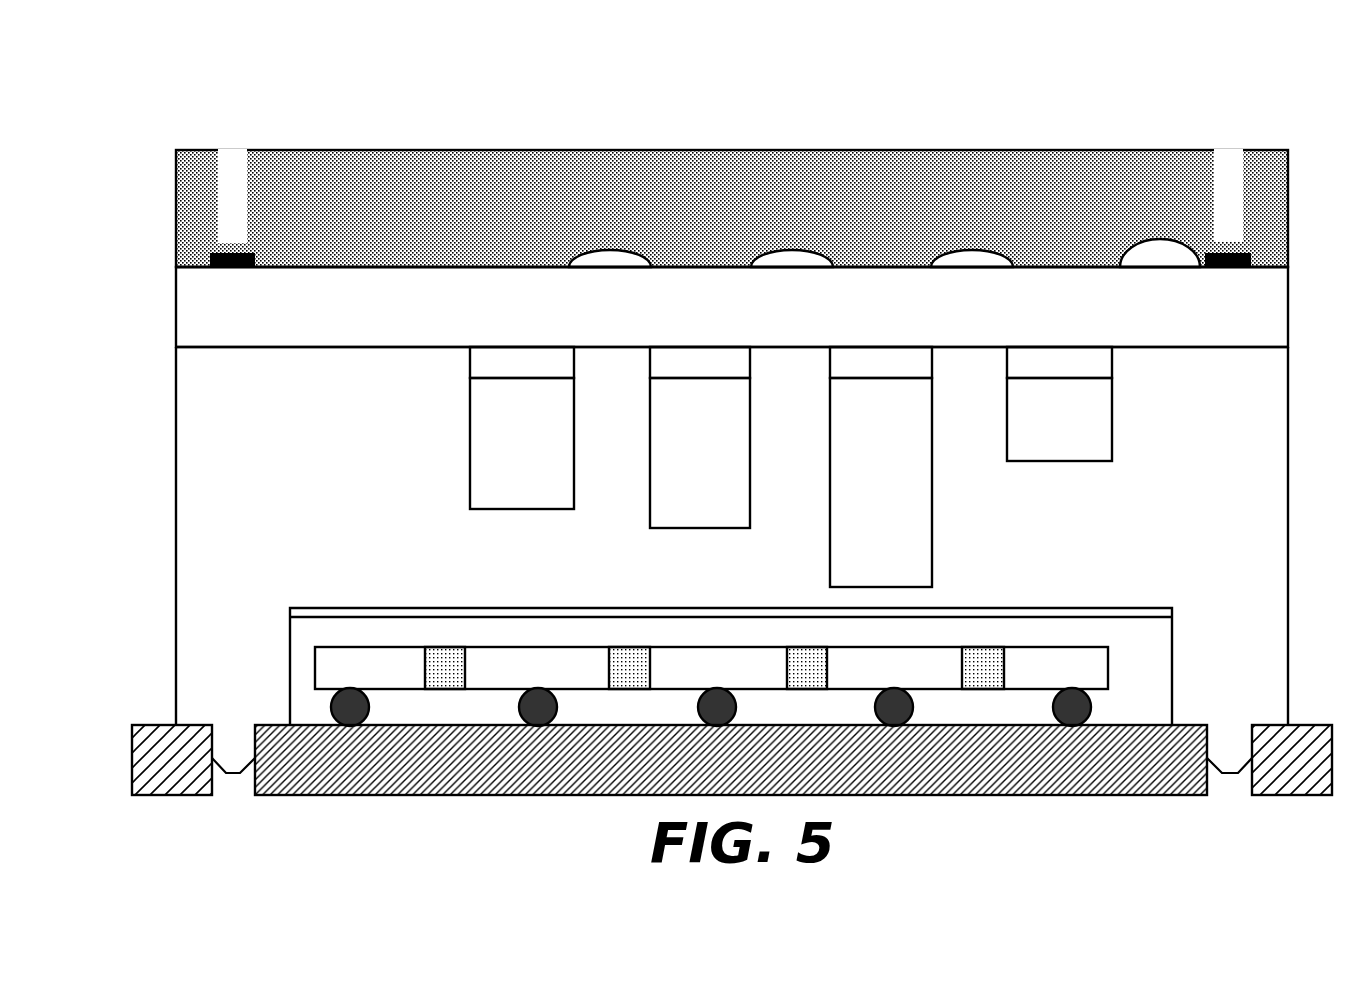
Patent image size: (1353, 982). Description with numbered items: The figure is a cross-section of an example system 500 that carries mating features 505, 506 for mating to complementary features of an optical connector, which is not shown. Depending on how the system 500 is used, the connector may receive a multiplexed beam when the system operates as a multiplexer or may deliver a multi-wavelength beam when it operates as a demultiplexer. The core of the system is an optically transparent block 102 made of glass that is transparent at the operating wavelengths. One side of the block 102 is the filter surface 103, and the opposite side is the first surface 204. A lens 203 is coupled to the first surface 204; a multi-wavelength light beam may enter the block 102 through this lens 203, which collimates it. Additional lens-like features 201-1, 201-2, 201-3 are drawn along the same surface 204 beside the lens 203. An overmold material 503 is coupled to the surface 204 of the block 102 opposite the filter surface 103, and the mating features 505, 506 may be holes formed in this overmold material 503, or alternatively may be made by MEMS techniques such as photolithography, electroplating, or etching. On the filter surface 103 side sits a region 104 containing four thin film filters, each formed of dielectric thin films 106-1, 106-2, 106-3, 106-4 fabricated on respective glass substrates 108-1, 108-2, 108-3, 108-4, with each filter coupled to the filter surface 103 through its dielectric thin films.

The system 500 is at (260, 48).
The overmold material 503 is at (178, 220).
The mating feature 505 is at (254, 136).
The mating feature 506 is at (1249, 131).
The first dome structure 201-1 is at (585, 252).
The second dome structure 201-2 is at (767, 252).
The third dome structure 201-3 is at (956, 252).
The lens 203 is at (1157, 239).
The optically transparent block 102 is at (176, 315).
The filter surface 103 is at (205, 347).
The first surface 204 is at (327, 267).
The device body 104 is at (176, 555).
The dielectric thin films 106-1 is at (522, 362).
The dielectric thin films 106-2 is at (700, 362).
The dielectric thin films 106-3 is at (881, 362).
The dielectric thin films 106-4 is at (1059, 362).
The substrate 108-1 is at (522, 443).
The substrate 108-2 is at (700, 453).
The substrate 108-3 is at (881, 482).
The substrate 108-4 is at (1059, 419).